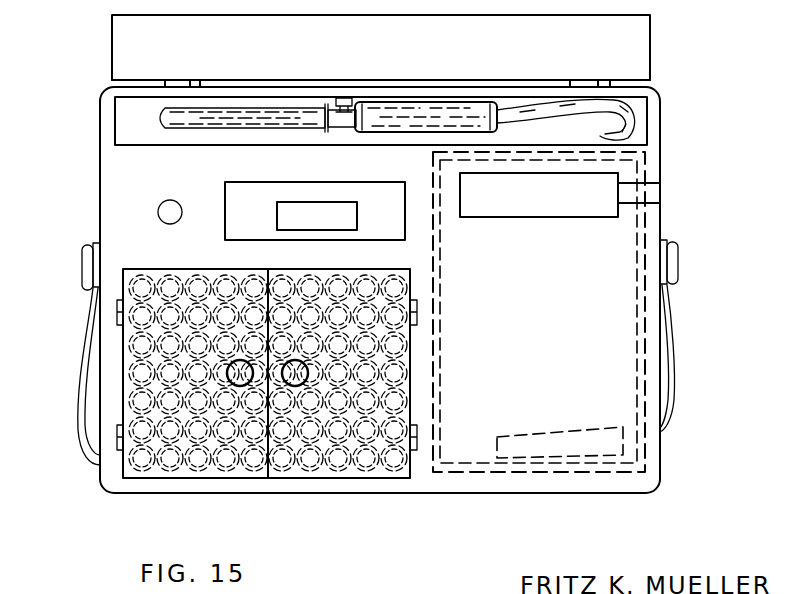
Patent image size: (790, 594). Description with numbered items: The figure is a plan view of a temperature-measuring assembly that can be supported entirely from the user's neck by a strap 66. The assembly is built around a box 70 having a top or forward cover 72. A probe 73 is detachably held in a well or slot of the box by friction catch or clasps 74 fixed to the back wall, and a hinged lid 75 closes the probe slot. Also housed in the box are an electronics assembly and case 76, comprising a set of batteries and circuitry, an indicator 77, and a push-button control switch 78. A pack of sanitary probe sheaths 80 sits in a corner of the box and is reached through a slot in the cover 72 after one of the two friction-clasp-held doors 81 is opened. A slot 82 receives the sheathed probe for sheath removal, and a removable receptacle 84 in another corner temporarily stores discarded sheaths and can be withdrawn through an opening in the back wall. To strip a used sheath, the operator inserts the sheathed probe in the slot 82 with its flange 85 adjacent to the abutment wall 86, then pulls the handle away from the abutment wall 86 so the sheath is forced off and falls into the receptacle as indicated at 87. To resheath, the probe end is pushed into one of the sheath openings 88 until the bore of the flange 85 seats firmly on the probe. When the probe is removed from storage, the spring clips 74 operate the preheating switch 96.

The strap 66 is at (80, 396).
The box 70 is at (100, 165).
The top or forward cover 72 is at (183, 174).
The probe 73 is at (358, 133).
The friction catch or clasps 74 is at (338, 130).
The hinged lid 75 is at (252, 62).
The electronics assembly and case 76 is at (398, 211).
The indicator 77 is at (281, 209).
The push-button control switch 78 is at (168, 224).
The pack of sanitary probe sheaths 80 is at (227, 276).
The friction-clasp-held doors 81 is at (268, 480).
The slot 82 is at (473, 217).
The removable receptacle 84 is at (645, 353).
The flange 85 is at (325, 100).
The abutment wall 86 is at (618, 203).
The discarded sheath falling into receptacle 87 is at (508, 433).
The sheath openings 88 is at (228, 462).
The preheating switch 96 is at (344, 96).